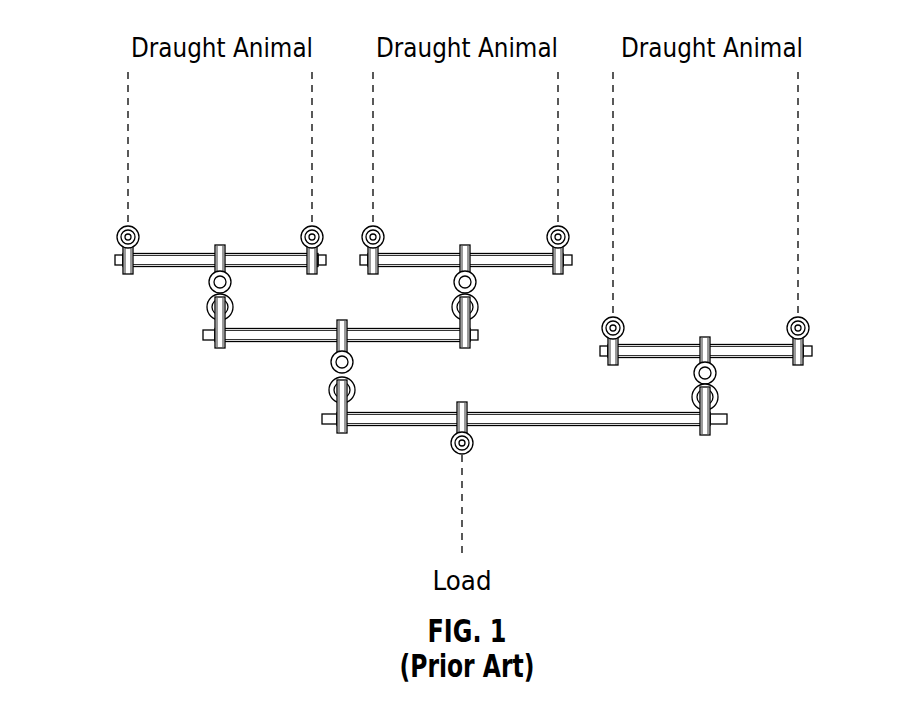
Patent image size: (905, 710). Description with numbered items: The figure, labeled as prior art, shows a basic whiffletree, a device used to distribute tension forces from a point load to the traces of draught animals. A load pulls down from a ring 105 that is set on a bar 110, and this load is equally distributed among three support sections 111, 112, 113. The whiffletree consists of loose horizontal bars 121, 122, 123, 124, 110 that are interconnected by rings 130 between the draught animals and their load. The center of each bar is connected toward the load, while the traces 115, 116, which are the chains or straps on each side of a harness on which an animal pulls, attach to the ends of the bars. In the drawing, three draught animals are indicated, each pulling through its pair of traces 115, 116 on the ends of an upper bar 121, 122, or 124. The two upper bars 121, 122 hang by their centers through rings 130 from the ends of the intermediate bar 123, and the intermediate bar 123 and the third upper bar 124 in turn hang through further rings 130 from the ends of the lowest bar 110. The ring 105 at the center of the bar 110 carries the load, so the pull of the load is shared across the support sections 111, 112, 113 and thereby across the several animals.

The ring 105 is at (475, 443).
The bar 110 is at (607, 427).
The support section 111 is at (187, 222).
The support section 112 is at (306, 324).
The support section 113 is at (489, 478).
The trace 115 is at (128, 144).
The trace 116 is at (312, 144).
The horizontal bar 121 is at (203, 253).
The horizontal bar 122 is at (447, 253).
The horizontal bar 123 is at (258, 328).
The horizontal bar 124 is at (688, 344).
The ring 130 is at (139, 233).